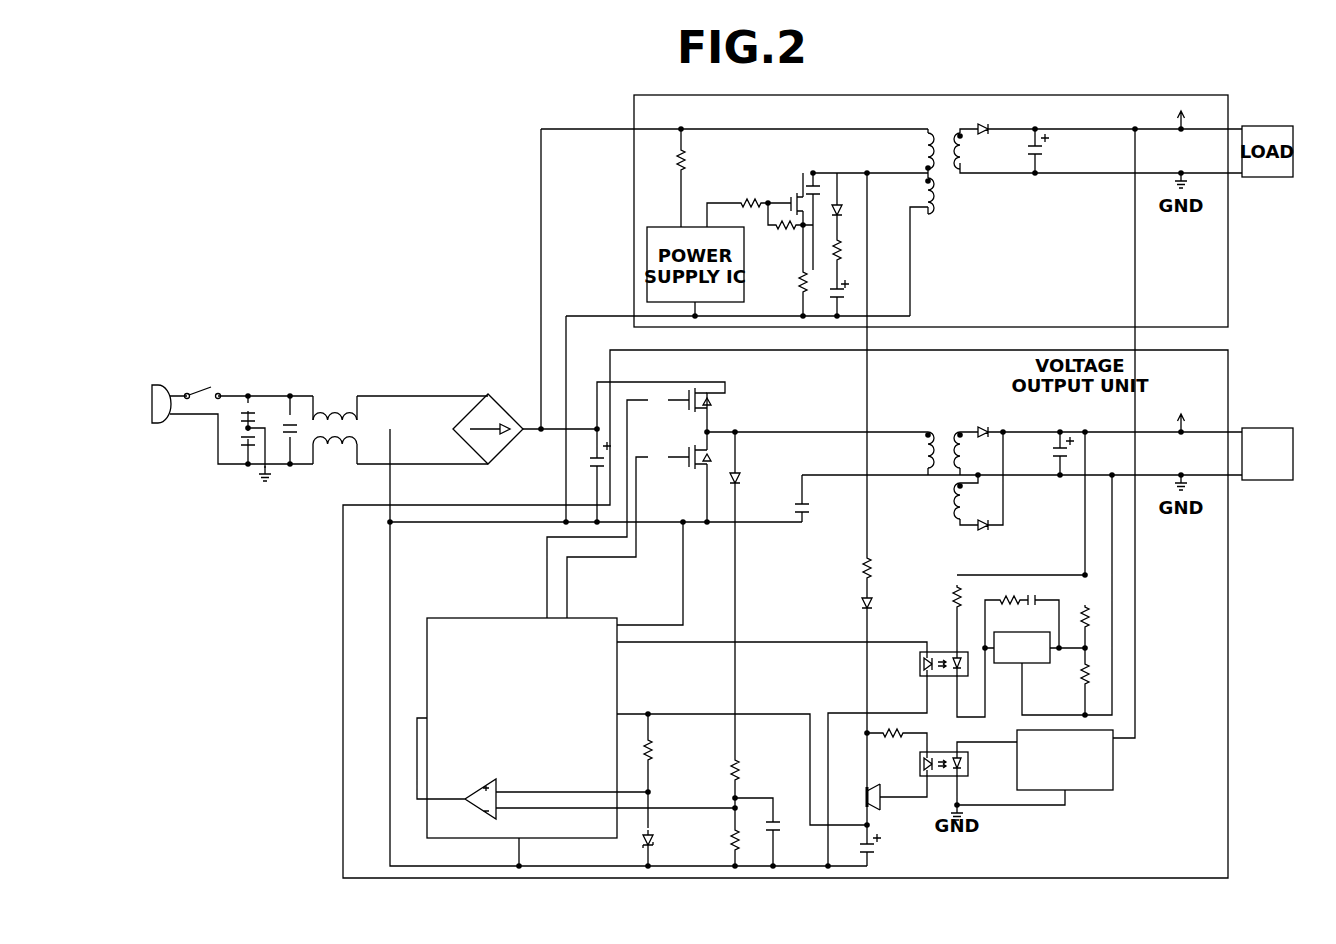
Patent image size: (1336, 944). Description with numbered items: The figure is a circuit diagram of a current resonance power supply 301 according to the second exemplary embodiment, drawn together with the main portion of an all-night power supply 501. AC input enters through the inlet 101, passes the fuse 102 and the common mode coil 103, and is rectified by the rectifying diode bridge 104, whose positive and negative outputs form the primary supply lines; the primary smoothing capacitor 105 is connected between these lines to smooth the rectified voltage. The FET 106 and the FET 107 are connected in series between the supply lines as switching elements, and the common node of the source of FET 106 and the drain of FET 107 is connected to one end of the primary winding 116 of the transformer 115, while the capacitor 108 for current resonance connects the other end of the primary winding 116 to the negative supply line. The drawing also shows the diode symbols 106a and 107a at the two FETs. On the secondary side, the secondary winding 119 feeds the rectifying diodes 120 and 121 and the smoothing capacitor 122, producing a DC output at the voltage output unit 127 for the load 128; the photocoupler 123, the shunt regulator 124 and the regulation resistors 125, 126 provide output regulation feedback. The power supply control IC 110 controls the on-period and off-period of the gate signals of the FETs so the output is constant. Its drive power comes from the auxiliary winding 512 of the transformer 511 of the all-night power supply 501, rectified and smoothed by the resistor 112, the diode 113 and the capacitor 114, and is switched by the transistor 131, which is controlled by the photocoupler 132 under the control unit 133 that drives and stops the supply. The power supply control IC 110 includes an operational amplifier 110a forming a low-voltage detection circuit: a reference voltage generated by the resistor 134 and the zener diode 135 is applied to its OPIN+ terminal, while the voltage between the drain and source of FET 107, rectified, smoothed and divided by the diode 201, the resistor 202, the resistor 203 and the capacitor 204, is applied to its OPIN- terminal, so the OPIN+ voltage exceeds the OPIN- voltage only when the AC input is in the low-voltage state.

The inlet 101 is at (160, 385).
The fuse 102 is at (205, 388).
The common mode coil 103 is at (327, 396).
The rectifying diode bridge 104 is at (505, 405).
The primary smoothing capacitor 105 is at (588, 462).
The FET 106 is at (704, 383).
The body diode of FET 106 106a is at (712, 401).
The FET 107 is at (689, 460).
The body diode of FET 107 107a is at (712, 458).
The capacitor for current resonance 108 is at (800, 508).
The power supply control IC 110 is at (552, 840).
The operational amplifier 110a is at (487, 788).
The resistor 112 is at (862, 572).
The diode 113 is at (862, 604).
The capacitor 114 is at (872, 850).
The transformer 115 is at (948, 434).
The primary winding 116 is at (925, 456).
The secondary winding 119 is at (955, 500).
The rectifying diode 120 is at (984, 426).
The rectifying diode 121 is at (988, 530).
The smoothing capacitor 122 is at (1055, 460).
The photocoupler 123 is at (942, 650).
The shunt regulator 124 is at (1030, 665).
The regulation resistor 125 is at (1090, 620).
The regulation resistor 126 is at (1090, 674).
The voltage output unit 127 is at (1176, 418).
The load 128 is at (1283, 481).
The transistor 131 is at (872, 807).
The photocoupler 132 is at (968, 767).
The control unit 133 is at (1113, 770).
The resistor 134 is at (652, 760).
The zener diode 135 is at (655, 843).
The diode 201 is at (742, 478).
The resistor 202 is at (730, 770).
The resistor 203 is at (728, 832).
The capacitor 204 is at (778, 830).
The current resonance power supply 301 is at (1228, 770).
The all-night power supply 501 is at (1228, 240).
The transformer 511 is at (945, 139).
The auxiliary winding 512 is at (921, 193).